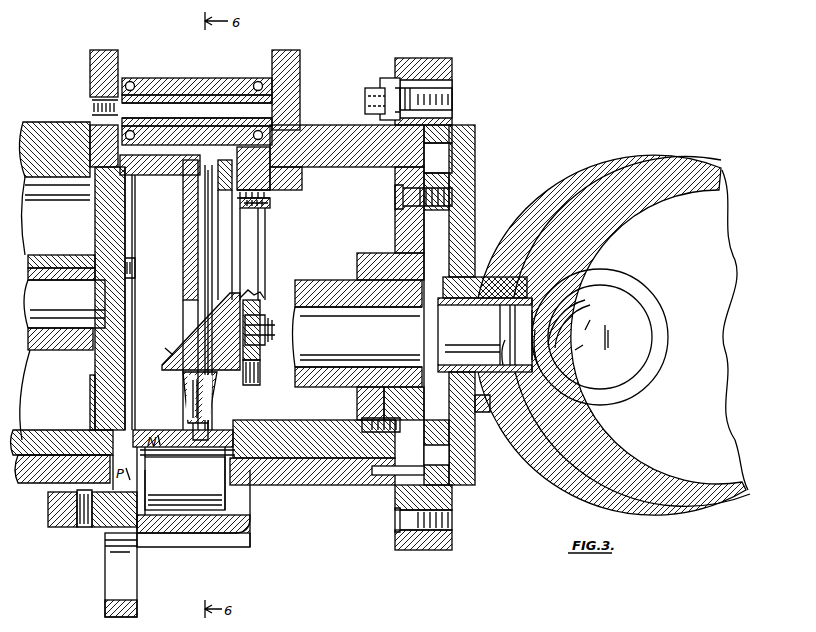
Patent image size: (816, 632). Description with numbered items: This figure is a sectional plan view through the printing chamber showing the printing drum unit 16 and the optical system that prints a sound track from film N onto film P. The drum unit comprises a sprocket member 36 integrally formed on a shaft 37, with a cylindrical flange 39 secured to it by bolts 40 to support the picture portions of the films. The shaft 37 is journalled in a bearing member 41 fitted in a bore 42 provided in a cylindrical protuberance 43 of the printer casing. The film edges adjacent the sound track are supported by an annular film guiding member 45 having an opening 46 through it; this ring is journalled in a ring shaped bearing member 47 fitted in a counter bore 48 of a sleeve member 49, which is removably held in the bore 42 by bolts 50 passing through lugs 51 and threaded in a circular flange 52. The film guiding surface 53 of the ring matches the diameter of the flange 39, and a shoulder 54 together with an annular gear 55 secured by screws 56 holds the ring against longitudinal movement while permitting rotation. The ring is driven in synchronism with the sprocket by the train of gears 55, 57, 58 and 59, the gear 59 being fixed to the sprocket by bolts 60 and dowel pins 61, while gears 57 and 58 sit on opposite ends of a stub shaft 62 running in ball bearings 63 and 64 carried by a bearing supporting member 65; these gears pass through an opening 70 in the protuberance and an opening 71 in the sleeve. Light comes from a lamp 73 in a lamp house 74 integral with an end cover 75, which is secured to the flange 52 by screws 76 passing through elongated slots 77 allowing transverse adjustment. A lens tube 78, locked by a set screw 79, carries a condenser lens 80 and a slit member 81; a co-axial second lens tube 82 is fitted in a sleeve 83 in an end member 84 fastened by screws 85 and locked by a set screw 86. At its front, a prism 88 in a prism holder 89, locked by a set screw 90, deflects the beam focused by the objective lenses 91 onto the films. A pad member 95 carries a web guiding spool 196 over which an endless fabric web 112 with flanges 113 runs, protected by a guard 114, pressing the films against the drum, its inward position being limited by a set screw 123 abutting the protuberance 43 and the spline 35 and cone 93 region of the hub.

The printing drum unit 16 is at (100, 378).
The spline 35 is at (125, 151).
The sprocket member 36 is at (127, 233).
The shaft 37 is at (66, 308).
The cylindrical flange 39 is at (178, 153).
The bolts 40 is at (150, 186).
The bearing member 41 is at (68, 342).
The bore 42 is at (40, 470).
The cylindrical protuberance 43 is at (310, 482).
The film guiding member 45 is at (207, 222).
The opening 46 is at (262, 258).
The bearing member 47 is at (206, 195).
The counter bore 48 is at (226, 478).
The sleeve member 49 is at (345, 437).
The bolts 50 is at (370, 90).
The lugs 51 is at (384, 78).
The circular flange 52 is at (422, 62).
The film guiding surface 53 is at (240, 150).
The shoulder 54 is at (210, 178).
The annular gear 55 is at (300, 186).
The screws 56 is at (300, 200).
The gear 57 is at (298, 82).
The gear 58 is at (90, 70).
The gear 59 is at (95, 232).
The bolts 60 is at (135, 268).
The dowel pins 61 is at (90, 208).
The stub shaft 62 is at (170, 92).
The ball bearings 63 is at (131, 80).
The ball bearings 64 is at (262, 80).
The bearing supporting member 65 is at (215, 78).
The opening 70 is at (93, 140).
The opening 71 is at (302, 132).
The lamp 73 is at (620, 322).
The lamp house 74 is at (626, 180).
The end cover 75 is at (472, 243).
The screws 76 is at (452, 96).
The elongated slots 77 is at (450, 80).
The lens tube 78 is at (468, 329).
The set screw 79 is at (480, 410).
The condenser lens 80 is at (545, 375).
The slit member 81 is at (472, 345).
The second lens tube 82 is at (330, 305).
The sleeve 83 is at (338, 388).
The end member 84 is at (395, 236).
The screws 85 is at (395, 196).
The set screw 86 is at (384, 430).
The prism 88 is at (188, 345).
The prism holder 89 is at (252, 296).
The set screw 90 is at (258, 387).
The objective lenses 91 is at (297, 330).
The cone 93 is at (183, 398).
The pad member 95 is at (137, 568).
The endless fabric web 112 is at (185, 523).
The flanges 113 is at (144, 526).
The guard 114 is at (250, 533).
The set screw 123 is at (78, 533).
The web guiding spool 196 is at (200, 493).